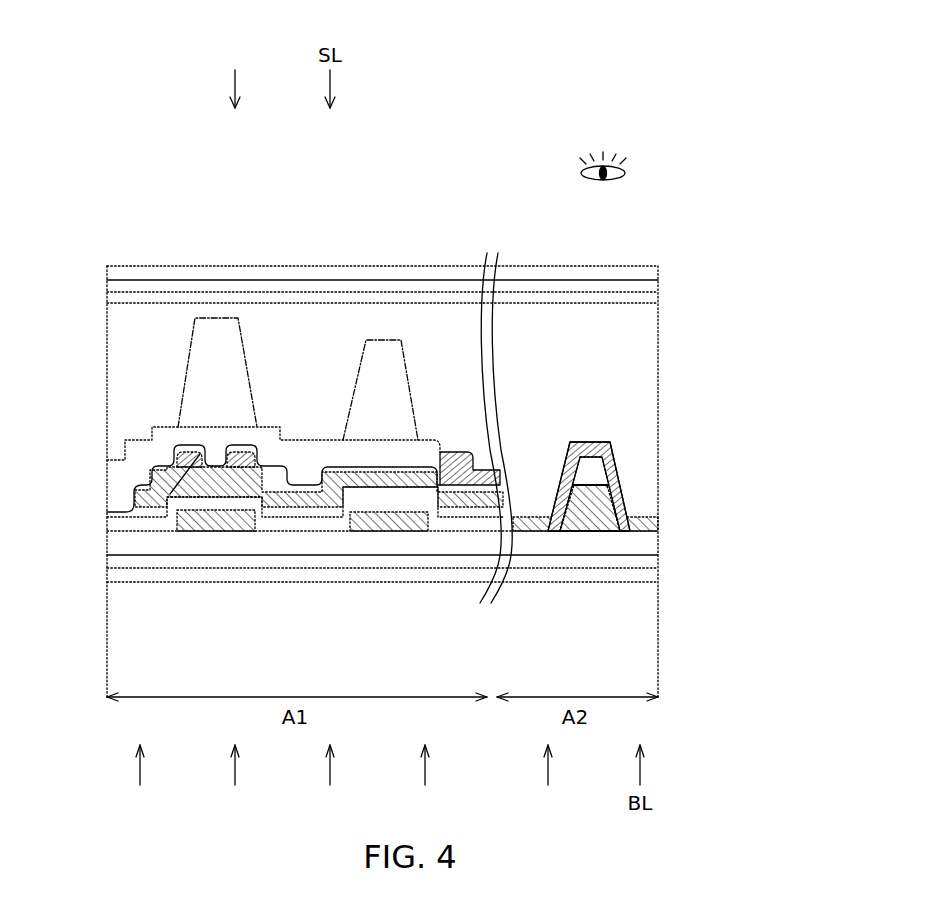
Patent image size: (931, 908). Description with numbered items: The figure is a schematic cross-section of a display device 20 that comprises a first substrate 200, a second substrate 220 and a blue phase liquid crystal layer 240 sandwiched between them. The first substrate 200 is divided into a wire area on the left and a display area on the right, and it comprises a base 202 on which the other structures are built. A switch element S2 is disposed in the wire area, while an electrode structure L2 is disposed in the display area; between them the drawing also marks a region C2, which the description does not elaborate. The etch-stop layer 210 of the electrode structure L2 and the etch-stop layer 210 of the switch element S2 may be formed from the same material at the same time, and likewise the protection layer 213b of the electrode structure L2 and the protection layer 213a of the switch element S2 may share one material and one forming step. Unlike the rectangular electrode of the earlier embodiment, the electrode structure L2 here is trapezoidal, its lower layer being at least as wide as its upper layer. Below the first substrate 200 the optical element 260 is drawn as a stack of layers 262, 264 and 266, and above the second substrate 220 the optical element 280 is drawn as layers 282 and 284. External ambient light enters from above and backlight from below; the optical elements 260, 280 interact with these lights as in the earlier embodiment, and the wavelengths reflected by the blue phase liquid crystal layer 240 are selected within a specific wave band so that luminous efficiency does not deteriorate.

The display device 20 is at (73, 38).
The first substrate 200 is at (138, 170).
The base 202 is at (124, 546).
The etch-stop layer 210 is at (215, 470).
The protection layer 213a is at (302, 490).
The protection layer 213b is at (603, 482).
The second substrate 220 is at (648, 298).
The blue phase liquid crystal layer 240 is at (643, 383).
The optical element 260 is at (724, 540).
The substrate layer 262 is at (648, 573).
The substrate layer 264 is at (648, 565).
The substrate layer 266 is at (648, 543).
The optical element 280 is at (724, 228).
The substrate layer 282 is at (648, 273).
The substrate layer 284 is at (648, 287).
The switch element S2 is at (193, 440).
The second capacitor region C2 is at (340, 380).
The electrode structure L2 is at (585, 435).